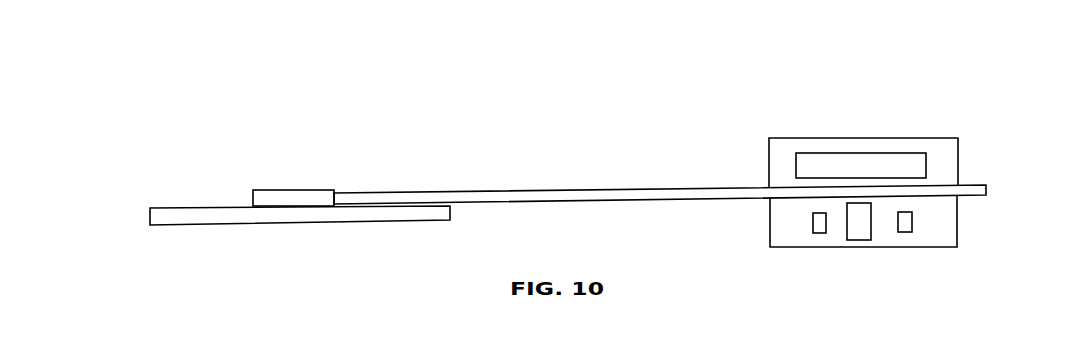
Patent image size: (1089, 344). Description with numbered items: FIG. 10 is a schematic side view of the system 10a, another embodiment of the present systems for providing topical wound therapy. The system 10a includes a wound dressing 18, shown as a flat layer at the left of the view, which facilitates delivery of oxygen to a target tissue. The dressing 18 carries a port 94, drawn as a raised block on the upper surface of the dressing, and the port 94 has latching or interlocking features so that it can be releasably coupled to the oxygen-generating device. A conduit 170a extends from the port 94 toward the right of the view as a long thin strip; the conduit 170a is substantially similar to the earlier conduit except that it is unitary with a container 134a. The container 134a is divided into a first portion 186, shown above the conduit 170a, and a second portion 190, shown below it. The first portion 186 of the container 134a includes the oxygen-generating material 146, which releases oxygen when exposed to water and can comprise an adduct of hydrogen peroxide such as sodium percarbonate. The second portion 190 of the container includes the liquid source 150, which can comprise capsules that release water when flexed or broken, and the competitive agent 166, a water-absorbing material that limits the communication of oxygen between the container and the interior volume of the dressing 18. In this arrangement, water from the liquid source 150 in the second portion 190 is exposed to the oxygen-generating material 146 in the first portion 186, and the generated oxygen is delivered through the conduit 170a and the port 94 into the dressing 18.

The system 10a is at (276, 128).
The wound dressing 18 is at (162, 191).
The port 94 is at (348, 179).
The conduit 170a is at (583, 192).
The container 134a is at (958, 113).
The oxygen-generating material 146 is at (802, 154).
The first portion 186 is at (972, 153).
The second portion 190 is at (974, 222).
The competitive agent 166 is at (817, 235).
The liquid source 150 is at (862, 240).